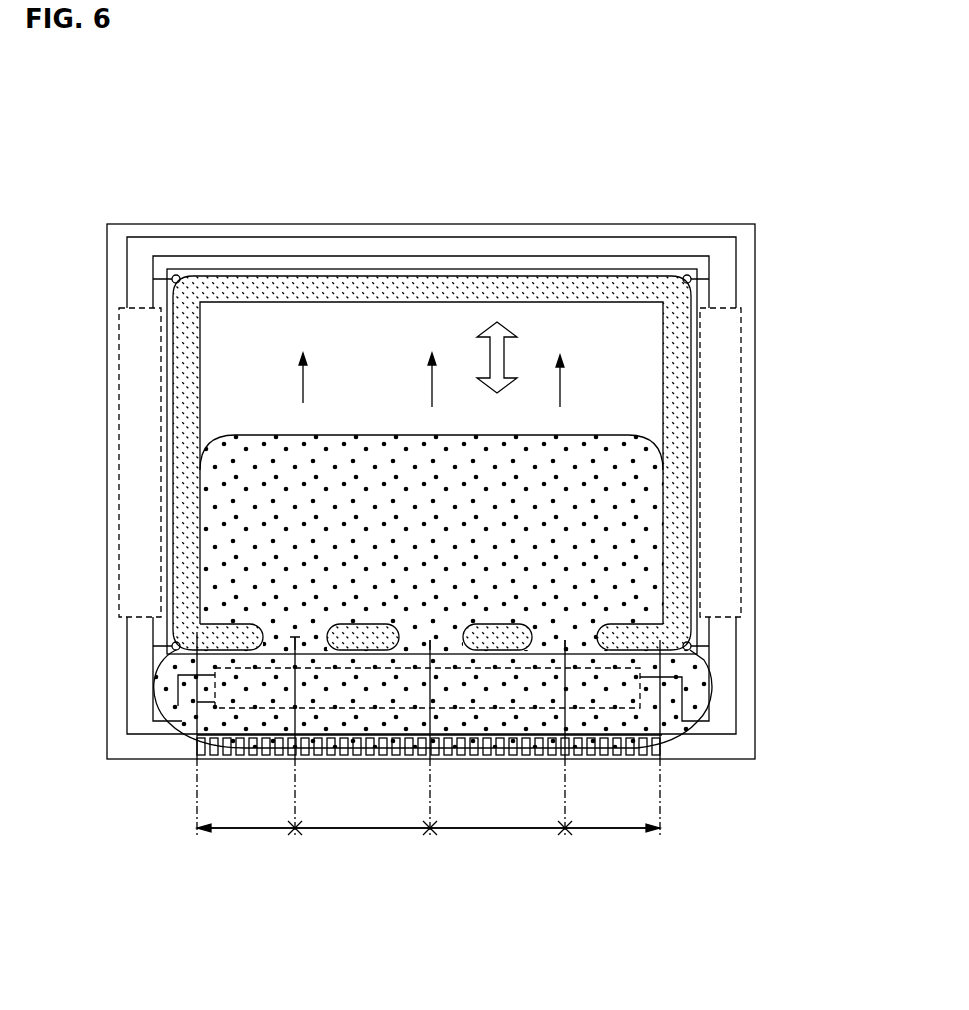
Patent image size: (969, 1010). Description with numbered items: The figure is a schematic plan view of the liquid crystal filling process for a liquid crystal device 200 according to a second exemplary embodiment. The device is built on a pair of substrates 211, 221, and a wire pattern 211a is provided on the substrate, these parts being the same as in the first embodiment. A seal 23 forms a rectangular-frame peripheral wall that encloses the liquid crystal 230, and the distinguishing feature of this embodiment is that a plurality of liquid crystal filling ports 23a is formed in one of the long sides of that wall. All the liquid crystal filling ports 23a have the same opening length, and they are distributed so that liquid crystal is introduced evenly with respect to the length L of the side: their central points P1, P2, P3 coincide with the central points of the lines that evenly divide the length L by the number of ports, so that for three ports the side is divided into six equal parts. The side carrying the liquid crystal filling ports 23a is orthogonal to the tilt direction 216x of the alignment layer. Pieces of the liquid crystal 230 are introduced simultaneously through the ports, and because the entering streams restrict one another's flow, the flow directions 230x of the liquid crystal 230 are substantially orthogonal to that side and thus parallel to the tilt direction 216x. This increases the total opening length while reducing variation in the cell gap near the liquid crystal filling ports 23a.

The liquid crystal device 200 is at (467, 162).
The substrate 211 is at (173, 222).
The wire pattern 211a is at (675, 236).
The substrate 221 is at (487, 268).
The seal 23 is at (268, 276).
The liquid crystal filling ports 23a is at (293, 640).
The liquid crystal 230 is at (637, 533).
The elastic member protrusion direction 230x is at (577, 404).
The tilt direction 216x is at (505, 355).
The central point P1 is at (293, 826).
The central point P2 is at (428, 826).
The central point P3 is at (568, 826).
The length L is at (500, 830).